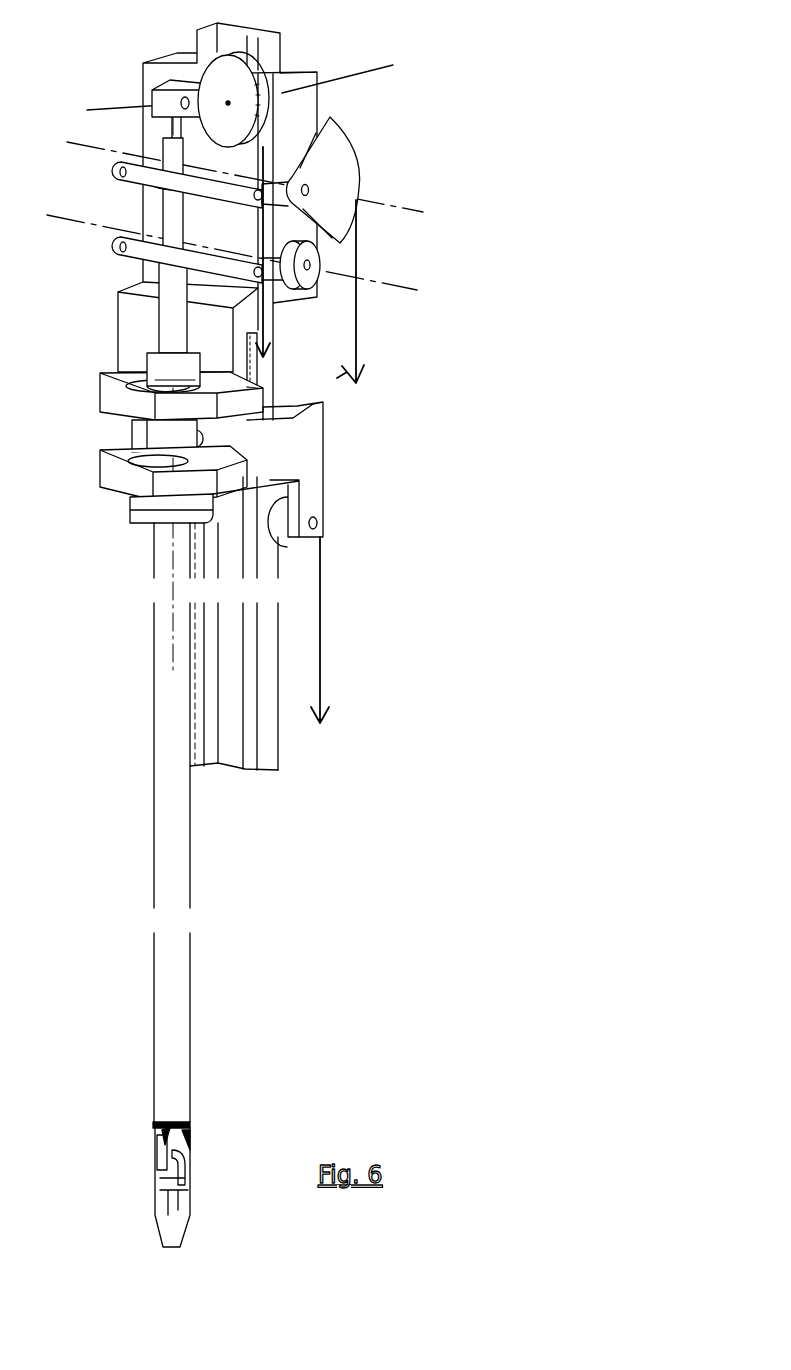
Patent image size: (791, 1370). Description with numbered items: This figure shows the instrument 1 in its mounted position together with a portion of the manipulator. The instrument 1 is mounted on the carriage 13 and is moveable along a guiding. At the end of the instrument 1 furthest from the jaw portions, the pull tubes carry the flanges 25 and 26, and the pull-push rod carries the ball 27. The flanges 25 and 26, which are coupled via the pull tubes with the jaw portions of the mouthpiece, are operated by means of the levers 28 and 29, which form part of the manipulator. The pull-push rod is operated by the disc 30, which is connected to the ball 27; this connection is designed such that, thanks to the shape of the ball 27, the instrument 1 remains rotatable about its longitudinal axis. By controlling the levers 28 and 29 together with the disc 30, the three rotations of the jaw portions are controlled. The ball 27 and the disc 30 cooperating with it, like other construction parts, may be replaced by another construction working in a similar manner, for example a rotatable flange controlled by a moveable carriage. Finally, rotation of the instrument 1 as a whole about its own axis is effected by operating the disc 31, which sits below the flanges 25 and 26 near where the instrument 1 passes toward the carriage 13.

The instrument 1 is at (165, 862).
The carriage 13 is at (265, 745).
The flange 25 is at (152, 260).
The flange 26 is at (157, 182).
The ball 27 is at (163, 99).
The lever 28 is at (313, 290).
The lever 29 is at (343, 168).
The disc 30 is at (233, 83).
The disc 31 is at (127, 500).